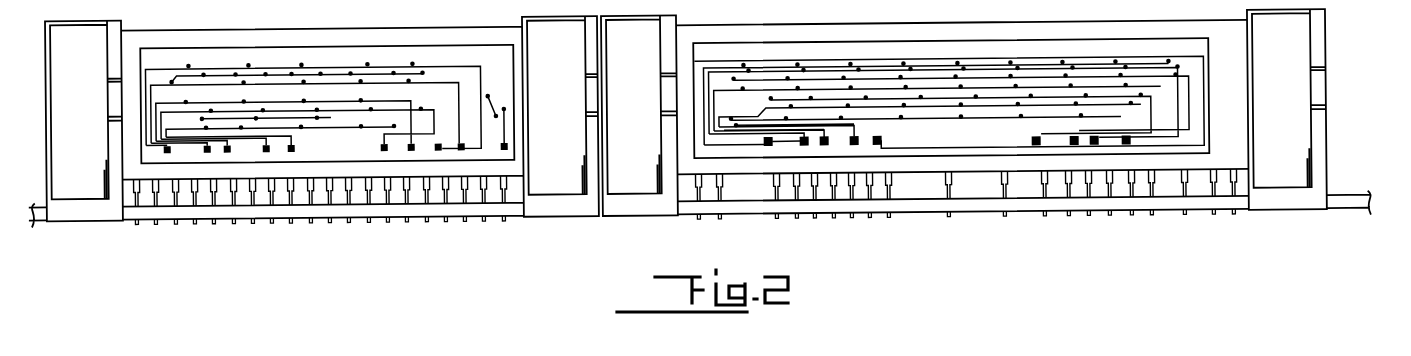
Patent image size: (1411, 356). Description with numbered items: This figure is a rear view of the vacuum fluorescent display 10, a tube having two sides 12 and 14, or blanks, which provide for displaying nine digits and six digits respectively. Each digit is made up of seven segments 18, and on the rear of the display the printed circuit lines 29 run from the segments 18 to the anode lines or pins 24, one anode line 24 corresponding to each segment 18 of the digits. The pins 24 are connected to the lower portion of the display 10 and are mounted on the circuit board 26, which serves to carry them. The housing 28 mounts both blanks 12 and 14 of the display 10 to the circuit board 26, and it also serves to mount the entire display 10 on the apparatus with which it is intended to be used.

The vacuum fluorescent display 10 is at (263, 244).
The side 12 is at (948, 226).
The side 14 is at (310, 161).
The segment 18 is at (642, 44).
The anode lines 24 is at (233, 201).
The circuit board 26 is at (341, 215).
The housing 28 is at (80, 57).
The printed circuit lines 29 is at (155, 147).